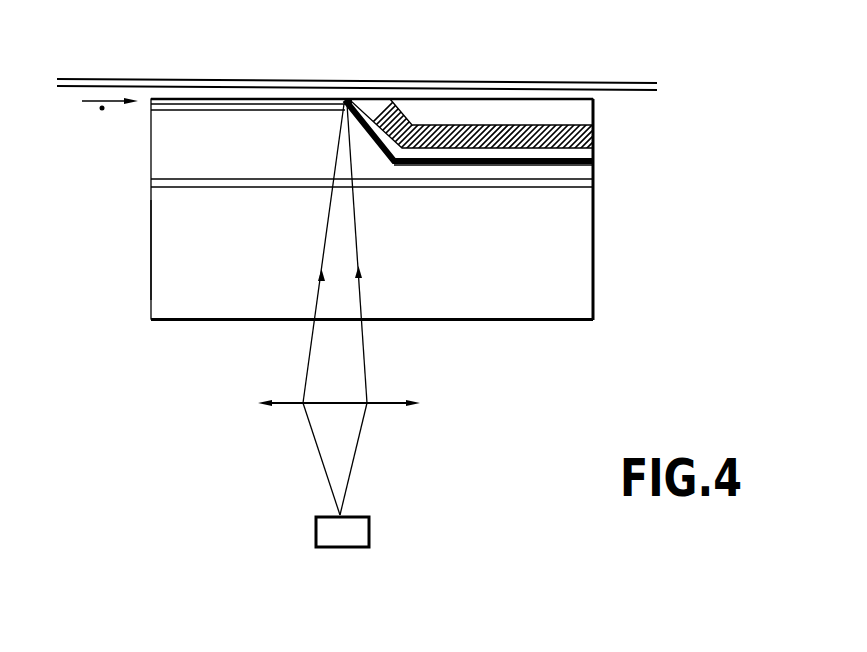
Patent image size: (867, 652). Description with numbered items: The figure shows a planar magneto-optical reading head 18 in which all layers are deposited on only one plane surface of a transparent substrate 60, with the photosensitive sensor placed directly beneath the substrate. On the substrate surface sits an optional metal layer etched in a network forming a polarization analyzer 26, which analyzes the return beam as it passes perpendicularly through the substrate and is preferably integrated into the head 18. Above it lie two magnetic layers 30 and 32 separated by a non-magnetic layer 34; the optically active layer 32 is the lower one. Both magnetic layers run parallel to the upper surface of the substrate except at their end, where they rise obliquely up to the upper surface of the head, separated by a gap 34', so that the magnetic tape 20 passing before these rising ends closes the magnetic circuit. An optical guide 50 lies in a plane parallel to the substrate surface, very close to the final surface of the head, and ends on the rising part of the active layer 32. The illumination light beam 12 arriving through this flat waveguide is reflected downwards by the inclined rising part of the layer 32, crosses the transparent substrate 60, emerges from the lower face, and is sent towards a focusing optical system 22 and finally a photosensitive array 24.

The light beam 12 is at (106, 102).
The head 18 is at (624, 201).
The magnetic tape 20 is at (608, 84).
The focusing optical system 22 is at (388, 404).
The photosensitive array 24 is at (370, 524).
The polarization analyzer 26 is at (163, 177).
The magnetic layer 30 is at (504, 126).
The optically active magnetic layer 32 is at (583, 168).
The non-magnetic layer 34 is at (515, 130).
The gap 34' is at (370, 66).
The optical guide 50 is at (232, 108).
The transparent substrate 60 is at (165, 252).